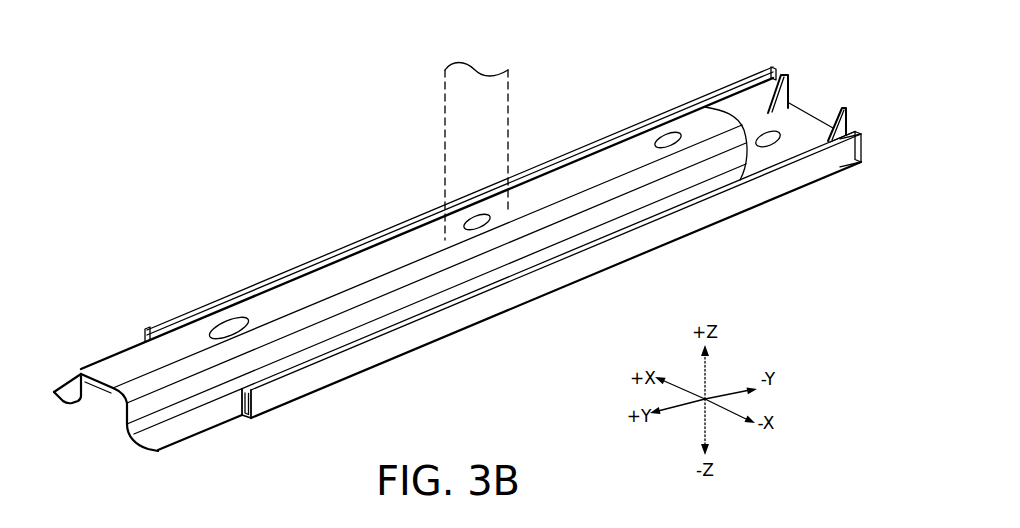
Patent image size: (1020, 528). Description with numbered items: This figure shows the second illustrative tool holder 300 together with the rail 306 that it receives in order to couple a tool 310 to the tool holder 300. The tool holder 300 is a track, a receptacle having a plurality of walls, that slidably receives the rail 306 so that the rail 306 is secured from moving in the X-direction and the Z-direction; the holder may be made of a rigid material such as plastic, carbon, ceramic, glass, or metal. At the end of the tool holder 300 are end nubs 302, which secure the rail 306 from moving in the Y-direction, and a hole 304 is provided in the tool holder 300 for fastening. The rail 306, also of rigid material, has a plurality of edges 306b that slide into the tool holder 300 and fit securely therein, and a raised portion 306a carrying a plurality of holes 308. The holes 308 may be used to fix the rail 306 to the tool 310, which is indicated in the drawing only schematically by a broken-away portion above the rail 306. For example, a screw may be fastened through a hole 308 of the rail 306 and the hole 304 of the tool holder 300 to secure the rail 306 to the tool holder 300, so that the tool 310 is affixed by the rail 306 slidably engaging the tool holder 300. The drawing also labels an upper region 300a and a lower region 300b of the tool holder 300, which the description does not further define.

The tool holder 300 is at (808, 108).
The upper portion of end bracket 300a is at (734, 108).
The lower portion of end bracket 300b is at (866, 170).
The end nubs 302 is at (784, 73).
The holes 304 is at (782, 144).
The rail 306 is at (457, 284).
The raised portion 306a is at (300, 288).
The edges 306b is at (163, 452).
The holes 308 is at (223, 320).
The tool 310 is at (445, 121).